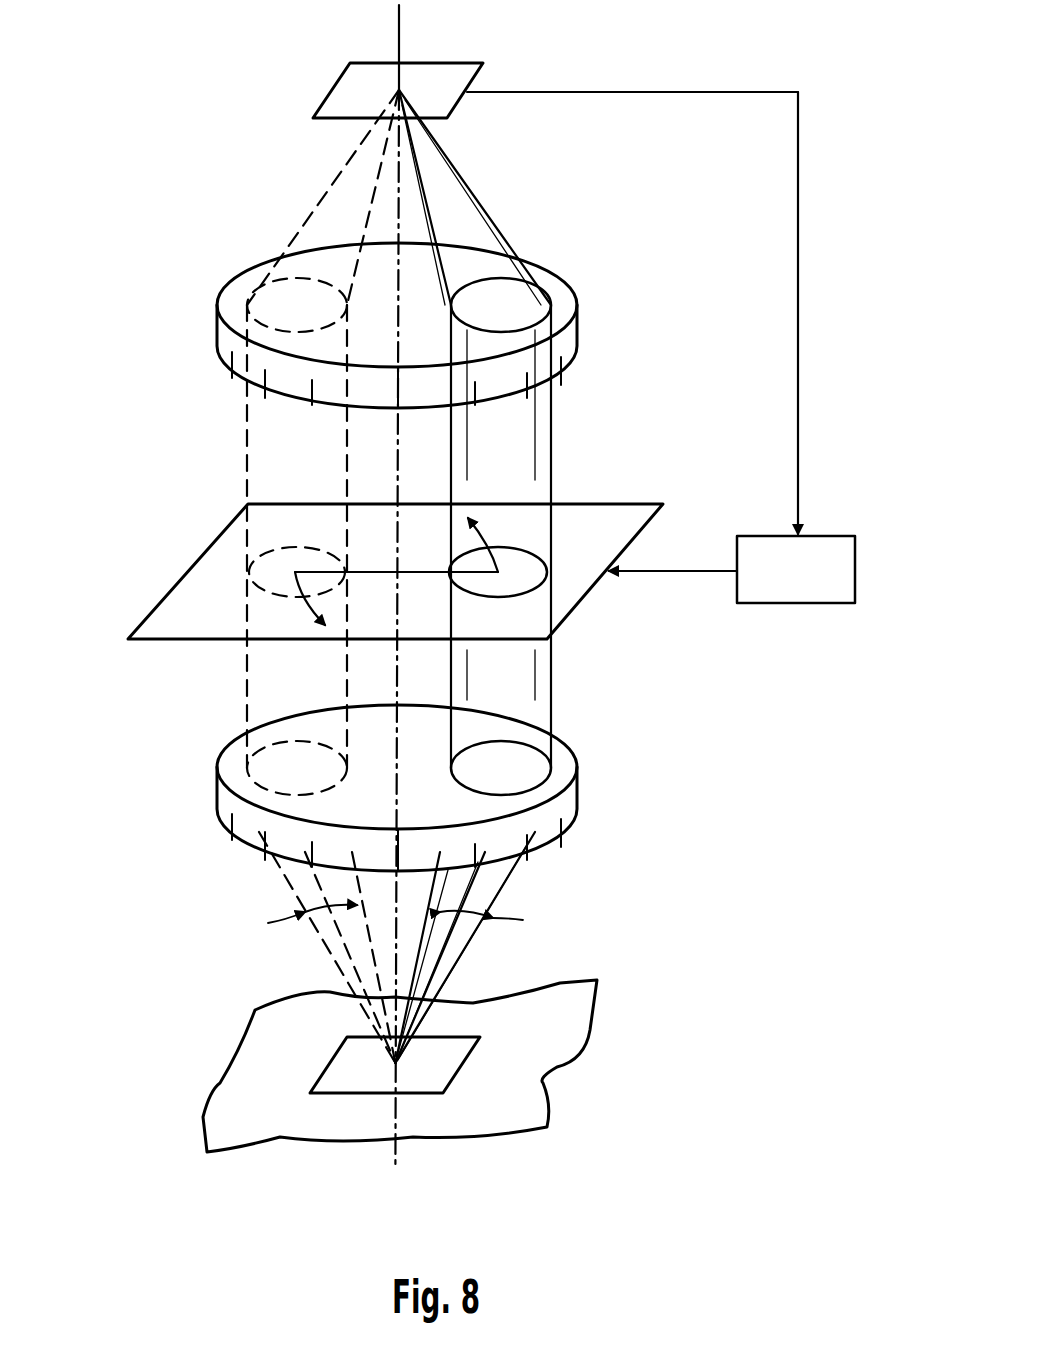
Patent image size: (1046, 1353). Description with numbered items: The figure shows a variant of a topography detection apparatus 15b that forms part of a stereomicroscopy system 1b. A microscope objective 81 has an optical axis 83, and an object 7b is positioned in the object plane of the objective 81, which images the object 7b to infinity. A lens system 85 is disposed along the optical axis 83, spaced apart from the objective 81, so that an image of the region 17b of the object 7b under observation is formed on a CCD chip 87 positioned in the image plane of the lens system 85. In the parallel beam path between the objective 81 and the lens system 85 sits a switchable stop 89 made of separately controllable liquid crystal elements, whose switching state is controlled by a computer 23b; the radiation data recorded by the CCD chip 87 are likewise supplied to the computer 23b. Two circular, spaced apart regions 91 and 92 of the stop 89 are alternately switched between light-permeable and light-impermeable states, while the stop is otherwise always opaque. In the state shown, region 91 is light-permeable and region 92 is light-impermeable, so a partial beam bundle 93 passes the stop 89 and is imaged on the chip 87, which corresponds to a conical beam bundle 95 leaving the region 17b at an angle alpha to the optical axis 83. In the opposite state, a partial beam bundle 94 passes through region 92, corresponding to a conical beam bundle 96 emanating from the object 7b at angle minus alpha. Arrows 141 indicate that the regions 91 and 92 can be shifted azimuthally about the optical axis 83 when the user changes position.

The stereomicroscopy system 1b is at (222, 135).
The topography detection apparatus 15b is at (177, 270).
The CCD chip 87 is at (457, 62).
The optical axis 83 is at (398, 222).
The lens system 85 is at (577, 325).
The partial beam bundle 94 is at (240, 407).
The partial beam bundle 93 is at (553, 407).
The switchable stop 89 is at (640, 502).
The circular region 92 is at (265, 563).
The circular region 91 is at (525, 577).
The arrows 141 is at (478, 540).
The computer 23b is at (817, 536).
The microscope objective 81 is at (577, 790).
The conical beam bundle 96 is at (283, 887).
The conical beam bundle 95 is at (517, 875).
The object 7b is at (200, 1122).
The region under observation 17b is at (425, 1097).